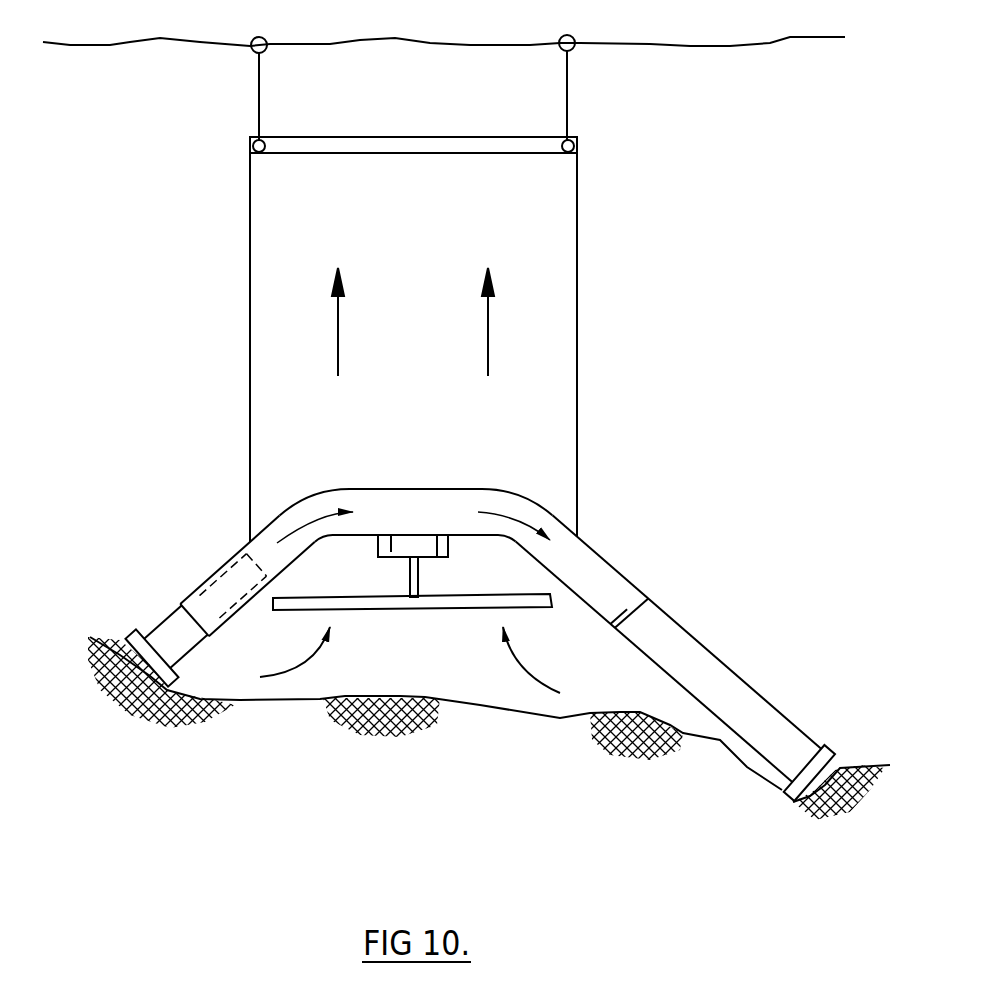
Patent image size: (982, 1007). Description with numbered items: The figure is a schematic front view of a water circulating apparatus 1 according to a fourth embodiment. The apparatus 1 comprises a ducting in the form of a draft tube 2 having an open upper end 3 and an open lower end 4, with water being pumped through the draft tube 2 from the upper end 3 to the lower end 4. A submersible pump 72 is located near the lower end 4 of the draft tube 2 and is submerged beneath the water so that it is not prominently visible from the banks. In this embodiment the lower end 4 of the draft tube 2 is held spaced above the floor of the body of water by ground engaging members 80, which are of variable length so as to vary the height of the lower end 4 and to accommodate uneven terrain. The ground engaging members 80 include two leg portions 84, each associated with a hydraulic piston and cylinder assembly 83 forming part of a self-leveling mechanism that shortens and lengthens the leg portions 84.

The apparatus 1 is at (183, 125).
The draft tube 2 is at (250, 278).
The upper end 3 is at (577, 169).
The lower end 4 is at (497, 533).
The submersible pump 72 is at (437, 547).
The ground engaging members 80 is at (307, 530).
The piston and cylinder assemblies 83 is at (177, 637).
The leg portions 84 is at (712, 683).